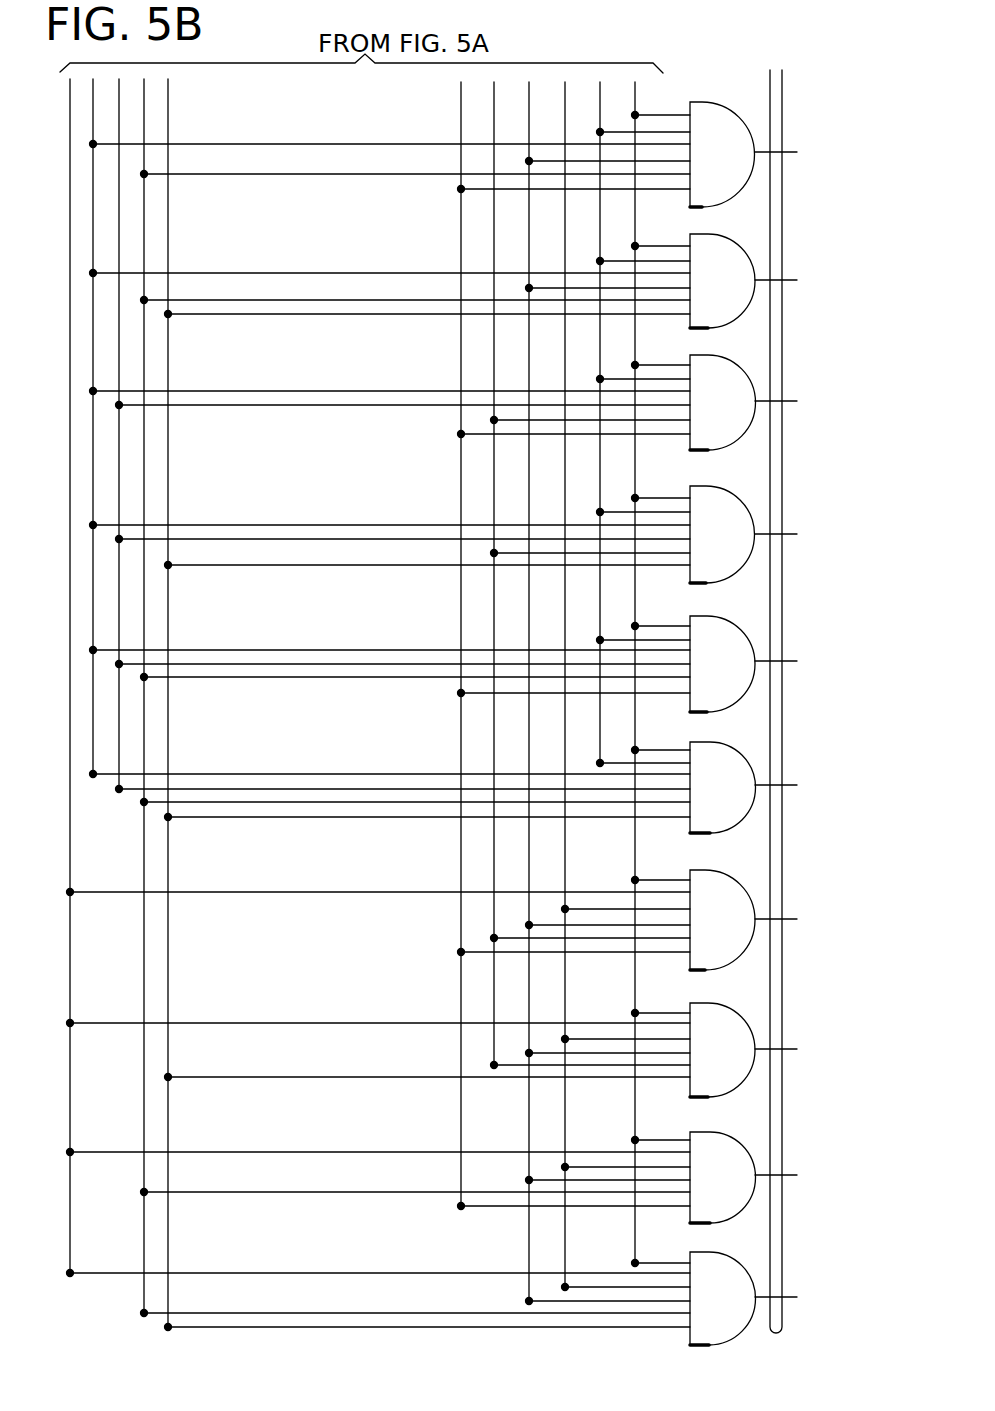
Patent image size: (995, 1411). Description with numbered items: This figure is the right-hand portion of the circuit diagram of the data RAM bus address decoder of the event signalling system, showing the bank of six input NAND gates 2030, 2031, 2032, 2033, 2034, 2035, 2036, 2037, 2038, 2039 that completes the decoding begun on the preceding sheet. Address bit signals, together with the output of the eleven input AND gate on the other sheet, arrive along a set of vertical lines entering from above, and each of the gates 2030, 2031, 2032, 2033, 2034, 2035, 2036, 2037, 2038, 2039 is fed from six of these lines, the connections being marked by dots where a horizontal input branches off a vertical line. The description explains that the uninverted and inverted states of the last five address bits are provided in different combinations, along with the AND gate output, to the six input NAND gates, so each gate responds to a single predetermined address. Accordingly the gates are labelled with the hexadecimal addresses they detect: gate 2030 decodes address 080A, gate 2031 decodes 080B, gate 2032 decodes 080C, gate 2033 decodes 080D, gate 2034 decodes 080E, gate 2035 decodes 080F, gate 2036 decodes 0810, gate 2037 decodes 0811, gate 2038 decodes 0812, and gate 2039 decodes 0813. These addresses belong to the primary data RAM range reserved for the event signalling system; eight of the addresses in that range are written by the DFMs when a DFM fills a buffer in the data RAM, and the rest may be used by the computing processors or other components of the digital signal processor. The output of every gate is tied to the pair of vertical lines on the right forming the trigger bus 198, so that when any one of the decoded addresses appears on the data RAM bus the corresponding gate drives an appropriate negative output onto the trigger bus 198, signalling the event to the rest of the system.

The six input NAND gate 2030 is at (744, 120).
The six input NAND gate 2031 is at (744, 252).
The six input NAND gate 2032 is at (744, 373).
The six input NAND gate 2033 is at (744, 504).
The AND gate 2034 is at (744, 634).
The AND gate 2035 is at (744, 760).
The AND gate 2036 is at (744, 888).
The AND gate 2037 is at (744, 1021).
The AND gate 2038 is at (744, 1150).
The AND gate 2039 is at (744, 1270).
The decoded output signal 080A is at (814, 152).
The decoded output signal 080B is at (814, 280).
The decoded output signal 080C is at (814, 401).
The decoded output signal 080D is at (815, 534).
The decoded output signal 080E is at (813, 661).
The decoded output signal 080F is at (813, 785).
The decoded output signal 0810 is at (813, 919).
The decoded output signal 0811 is at (813, 1049).
The decoded output signal 0812 is at (813, 1175).
The decoded output signal 0813 is at (813, 1297).
The trigger bus 198 is at (770, 1336).